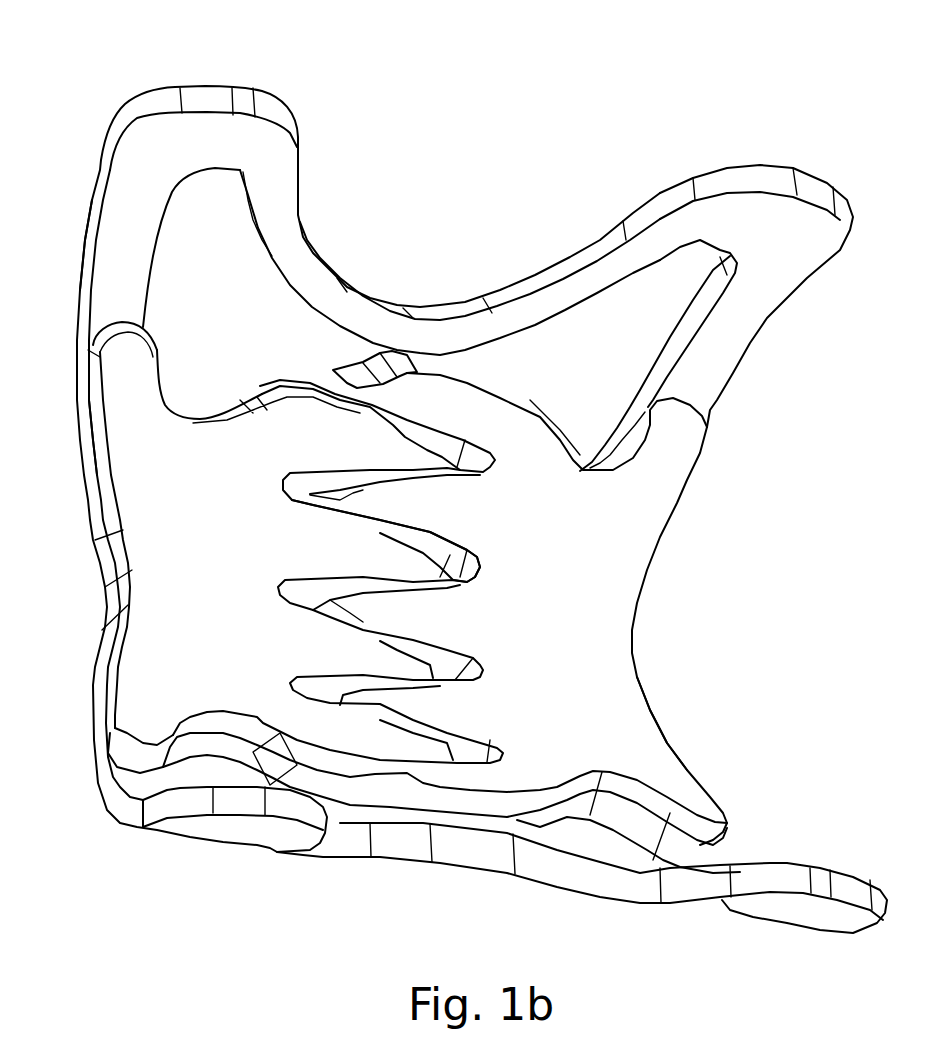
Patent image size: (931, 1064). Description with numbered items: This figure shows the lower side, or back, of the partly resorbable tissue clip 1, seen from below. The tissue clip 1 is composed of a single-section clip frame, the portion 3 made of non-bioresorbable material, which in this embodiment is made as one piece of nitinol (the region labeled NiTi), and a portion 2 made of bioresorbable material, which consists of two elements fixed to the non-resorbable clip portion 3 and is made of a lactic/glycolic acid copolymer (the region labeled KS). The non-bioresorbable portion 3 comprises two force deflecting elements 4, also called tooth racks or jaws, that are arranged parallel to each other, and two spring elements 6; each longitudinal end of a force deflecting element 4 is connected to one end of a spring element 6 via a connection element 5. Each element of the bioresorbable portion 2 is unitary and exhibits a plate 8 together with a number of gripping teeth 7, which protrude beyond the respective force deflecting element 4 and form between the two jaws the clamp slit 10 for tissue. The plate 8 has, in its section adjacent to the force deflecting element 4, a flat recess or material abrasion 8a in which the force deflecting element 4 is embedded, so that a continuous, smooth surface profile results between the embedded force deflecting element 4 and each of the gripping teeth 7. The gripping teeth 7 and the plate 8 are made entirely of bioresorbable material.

The tissue clip 1 is at (447, 495).
The portion made of bioresorbable material 2 is at (653, 688).
The portion made of non-bioresorbable material 3 is at (573, 254).
The force deflecting element 4 is at (603, 813).
The connection element 5 is at (762, 306).
The spring element 6 is at (400, 333).
The gripping teeth 7 is at (434, 385).
The plate 8 is at (575, 636).
The recess/material abrasion 8a is at (253, 753).
The clamp slit 10 is at (470, 556).
The nickel-titanium material NiTi is at (116, 172).
The plastic material (Kunststoff) KS is at (123, 447).